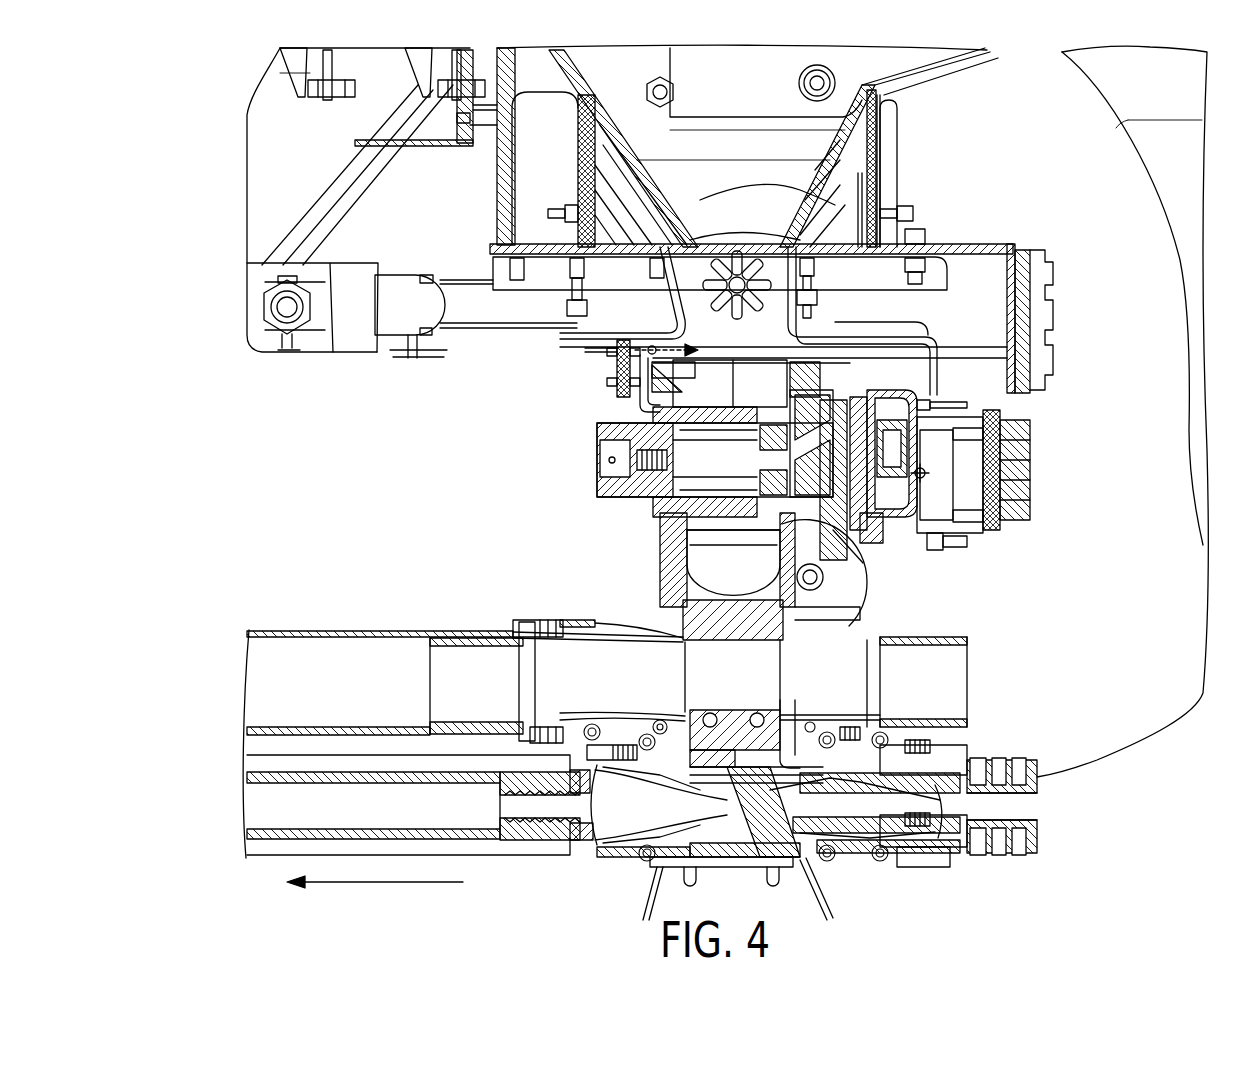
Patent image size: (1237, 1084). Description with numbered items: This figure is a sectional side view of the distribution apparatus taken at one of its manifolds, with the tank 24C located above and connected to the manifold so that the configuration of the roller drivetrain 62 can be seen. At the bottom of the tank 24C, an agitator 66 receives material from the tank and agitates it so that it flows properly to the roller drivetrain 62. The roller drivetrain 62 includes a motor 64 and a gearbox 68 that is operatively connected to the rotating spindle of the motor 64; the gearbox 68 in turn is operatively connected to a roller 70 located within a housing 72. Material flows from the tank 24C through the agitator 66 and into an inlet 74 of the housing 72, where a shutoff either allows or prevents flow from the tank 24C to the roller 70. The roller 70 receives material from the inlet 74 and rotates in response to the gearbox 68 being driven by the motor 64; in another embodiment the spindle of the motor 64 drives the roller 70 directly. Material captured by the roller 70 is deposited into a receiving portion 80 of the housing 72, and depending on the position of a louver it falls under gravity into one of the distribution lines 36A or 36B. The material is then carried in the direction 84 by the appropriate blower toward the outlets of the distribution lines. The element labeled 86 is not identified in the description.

The tank 24C is at (958, 68).
The agitator 66 is at (745, 280).
The gearbox 68 is at (888, 413).
The motor 64 is at (1032, 450).
The roller drivetrain 62 is at (996, 540).
The pump housing 86 is at (880, 577).
The inlet 74 is at (612, 360).
The housing 72 is at (640, 390).
The roller 70 is at (600, 499).
The receiving portion 80 is at (692, 551).
The distribution line 36A is at (267, 673).
The distribution line 36B is at (267, 806).
The direction 84 is at (422, 882).